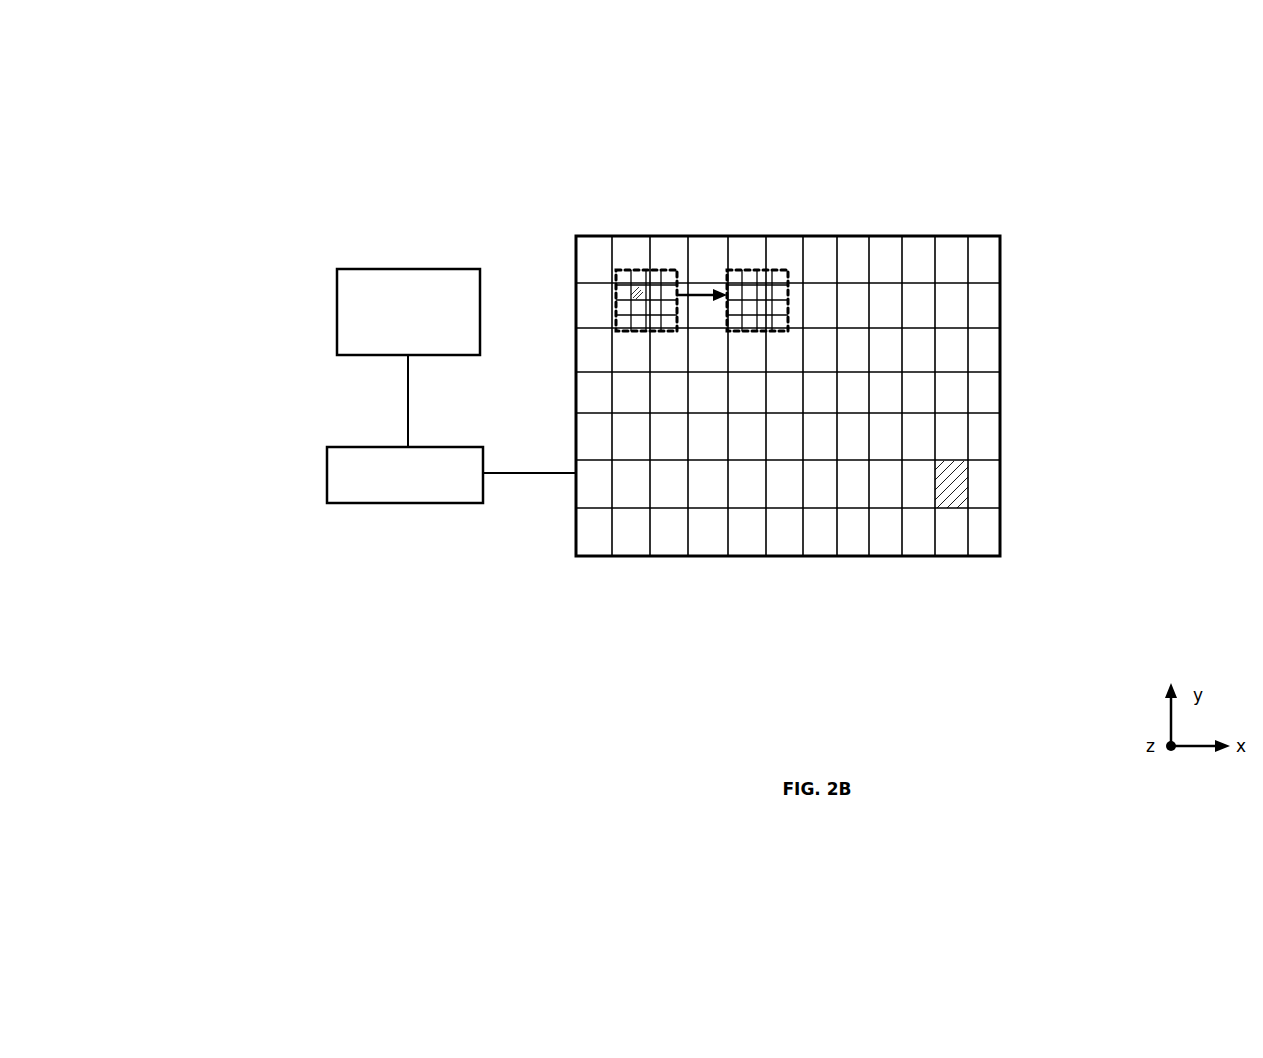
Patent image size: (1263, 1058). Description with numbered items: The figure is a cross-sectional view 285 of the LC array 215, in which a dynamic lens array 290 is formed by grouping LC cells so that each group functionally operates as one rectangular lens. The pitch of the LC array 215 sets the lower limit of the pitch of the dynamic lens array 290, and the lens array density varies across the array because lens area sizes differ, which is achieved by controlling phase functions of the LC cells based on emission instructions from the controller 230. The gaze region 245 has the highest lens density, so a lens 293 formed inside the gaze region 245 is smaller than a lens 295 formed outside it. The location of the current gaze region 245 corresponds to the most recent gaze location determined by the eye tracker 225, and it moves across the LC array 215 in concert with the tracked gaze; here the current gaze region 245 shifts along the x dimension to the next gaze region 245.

The cross-sectional view 285 is at (266, 88).
The LC array 215 is at (958, 235).
The dynamic lens array 290 is at (970, 382).
The gaze region 245 is at (747, 270).
The lens 293 is at (636, 292).
The lens 295 is at (960, 490).
The eye tracker 225 is at (337, 311).
The controller 230 is at (327, 488).